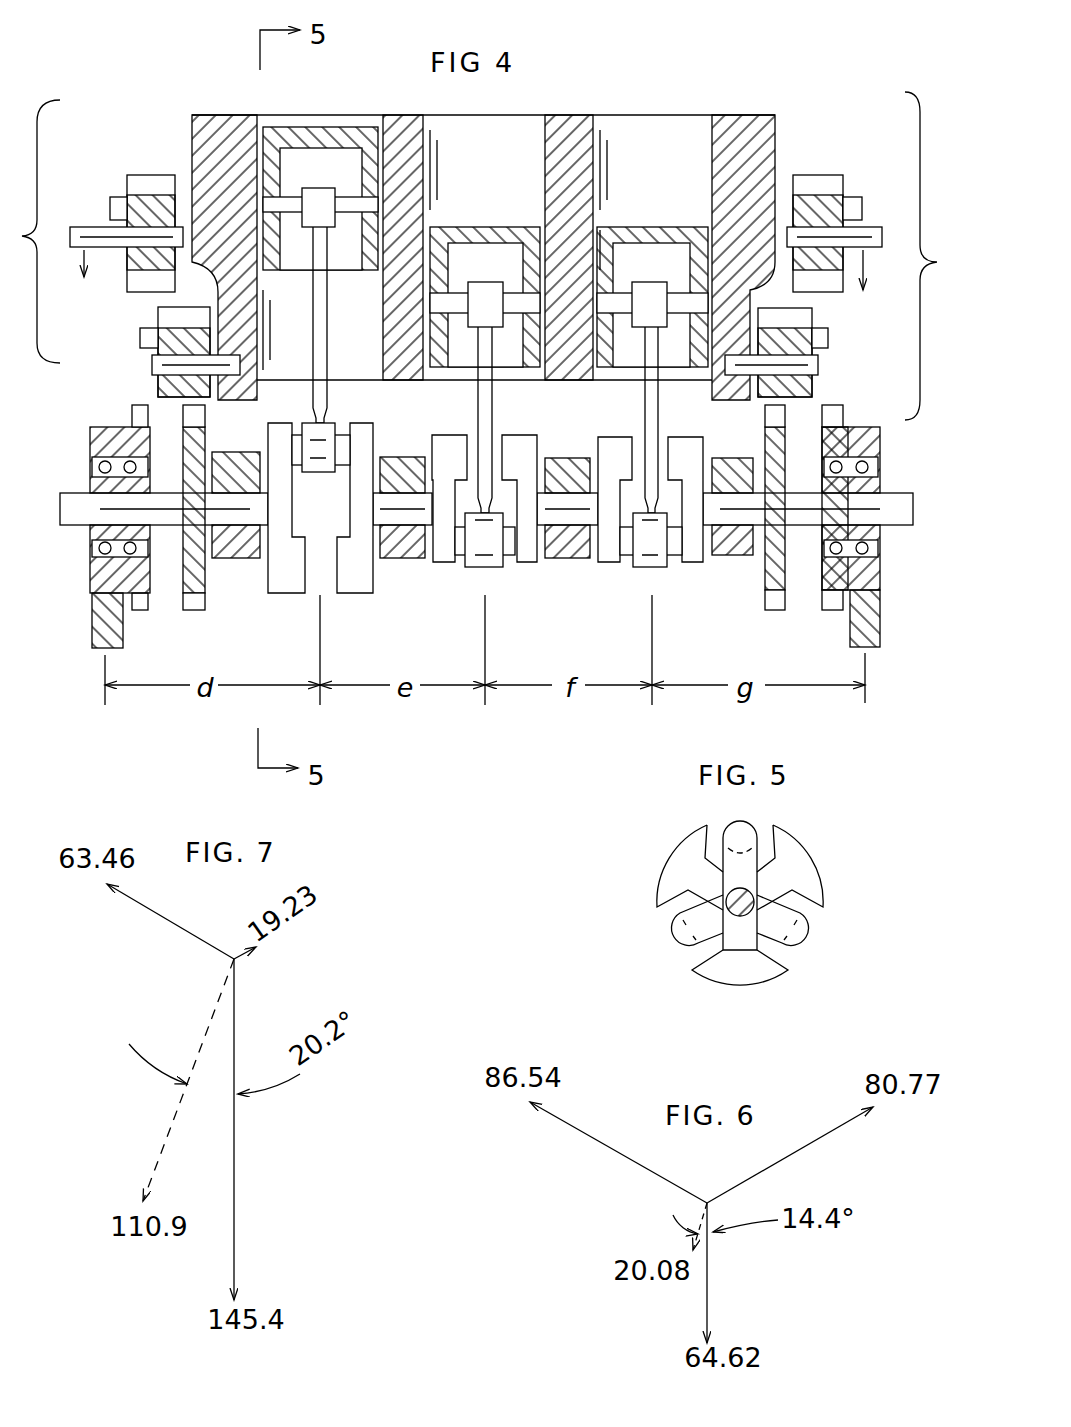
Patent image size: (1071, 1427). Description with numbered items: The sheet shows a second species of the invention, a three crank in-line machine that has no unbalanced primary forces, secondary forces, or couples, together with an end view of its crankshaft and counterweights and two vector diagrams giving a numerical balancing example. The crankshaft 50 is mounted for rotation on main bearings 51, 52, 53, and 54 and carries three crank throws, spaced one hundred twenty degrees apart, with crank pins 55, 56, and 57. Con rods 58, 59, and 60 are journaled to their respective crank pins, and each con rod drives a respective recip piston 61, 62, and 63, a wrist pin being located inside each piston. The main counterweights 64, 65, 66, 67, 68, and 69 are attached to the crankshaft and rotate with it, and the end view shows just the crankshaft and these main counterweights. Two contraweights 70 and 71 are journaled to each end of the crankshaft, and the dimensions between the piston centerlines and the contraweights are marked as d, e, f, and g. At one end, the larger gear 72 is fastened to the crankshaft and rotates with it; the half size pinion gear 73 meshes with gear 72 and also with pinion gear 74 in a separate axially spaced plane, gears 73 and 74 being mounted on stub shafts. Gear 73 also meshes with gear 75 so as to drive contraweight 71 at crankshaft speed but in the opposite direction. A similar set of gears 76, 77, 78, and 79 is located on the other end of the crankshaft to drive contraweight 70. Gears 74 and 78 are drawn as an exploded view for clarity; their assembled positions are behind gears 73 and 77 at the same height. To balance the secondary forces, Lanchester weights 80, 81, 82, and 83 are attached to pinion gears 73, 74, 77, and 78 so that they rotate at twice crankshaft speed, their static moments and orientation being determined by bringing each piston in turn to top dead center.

In FIG. 4, the crankshaft 50 is at (897, 512).
In FIG. 4, the main bearing 51 is at (235, 555).
In FIG. 4, the main bearing 52 is at (401, 553).
In FIG. 4, the main bearing 53 is at (562, 556).
In FIG. 4, the main bearing 54 is at (720, 562).
In FIG. 4, the crank pin 55 is at (300, 420).
In FIG. 5, the crank pin 55 is at (745, 833).
In FIG. 4, the crank pin 56 is at (466, 565).
In FIG. 5, the crank pin 56 is at (800, 935).
In FIG. 4, the crank pin 57 is at (628, 565).
In FIG. 5, the crank pin 57 is at (685, 930).
In FIG. 4, the con rod 58 is at (316, 352).
In FIG. 4, the con rod 59 is at (478, 415).
In FIG. 4, the con rod 60 is at (645, 400).
In FIG. 4, the recip piston 61 is at (321, 140).
In FIG. 4, the recip piston 62 is at (480, 237).
In FIG. 4, the recip piston 63 is at (650, 237).
In FIG. 4, the main counterweight 64 is at (283, 592).
In FIG. 5, the main counterweight 64 is at (719, 1006).
In FIG. 4, the main counterweight 65 is at (353, 585).
In FIG. 5, the main counterweight 65 is at (735, 975).
In FIG. 4, the main counterweight 66 is at (440, 446).
In FIG. 5, the main counterweight 66 is at (649, 855).
In FIG. 4, the main counterweight 67 is at (520, 447).
In FIG. 5, the main counterweight 67 is at (676, 858).
In FIG. 4, the main counterweight 68 is at (615, 446).
In FIG. 5, the main counterweight 68 is at (830, 865).
In FIG. 4, the main counterweight 69 is at (682, 447).
In FIG. 5, the main counterweight 69 is at (808, 875).
In FIG. 4, the contraweight 70 is at (92, 628).
In FIG. 4, the contraweight 71 is at (882, 621).
In FIG. 4, the larger gear 72 is at (770, 603).
In FIG. 4, the half size pinion gear 73 is at (812, 388).
In FIG. 4, the pinion gear 74 is at (826, 185).
In FIG. 4, the gear 75 is at (830, 606).
In FIG. 4, the gear 76 is at (192, 606).
In FIG. 4, the gear 77 is at (158, 318).
In FIG. 4, the gear 78 is at (150, 185).
In FIG. 4, the gear 79 is at (135, 409).
In FIG. 4, the Lanchester weight 80 is at (828, 340).
In FIG. 4, the Lanchester weight 81 is at (850, 210).
In FIG. 4, the Lanchester weight 82 is at (140, 340).
In FIG. 4, the Lanchester weight 83 is at (110, 208).